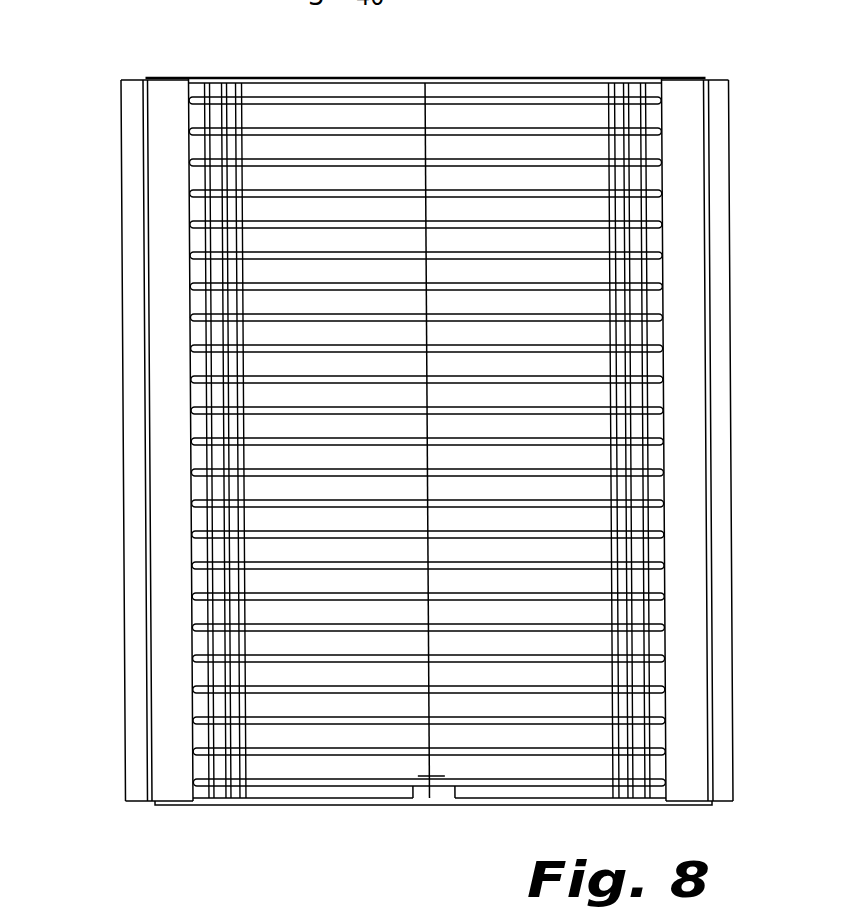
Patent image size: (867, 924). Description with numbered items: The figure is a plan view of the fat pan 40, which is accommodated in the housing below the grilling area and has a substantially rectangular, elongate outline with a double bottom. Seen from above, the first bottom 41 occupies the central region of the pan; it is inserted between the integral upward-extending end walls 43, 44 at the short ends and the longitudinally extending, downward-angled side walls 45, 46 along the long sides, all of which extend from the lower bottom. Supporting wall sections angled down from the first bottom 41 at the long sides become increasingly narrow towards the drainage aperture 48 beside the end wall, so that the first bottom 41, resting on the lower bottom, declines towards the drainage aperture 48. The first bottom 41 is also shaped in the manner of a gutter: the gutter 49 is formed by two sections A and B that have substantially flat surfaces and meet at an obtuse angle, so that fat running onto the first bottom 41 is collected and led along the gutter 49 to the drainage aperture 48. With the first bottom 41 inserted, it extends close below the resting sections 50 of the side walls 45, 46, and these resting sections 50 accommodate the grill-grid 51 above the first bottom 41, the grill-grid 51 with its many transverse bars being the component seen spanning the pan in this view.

The fat pan 40 is at (431, 452).
The first bottom 41 is at (431, 452).
The end wall 43 is at (358, 803).
The end wall 44 is at (490, 78).
The side wall 45 is at (163, 392).
The side wall 46 is at (688, 497).
The drainage aperture 48 is at (440, 800).
The gutter 49 is at (424, 515).
The resting sections 50 is at (200, 88).
The grill-grid 51 is at (525, 252).
The section A is at (313, 735).
The section B is at (525, 582).